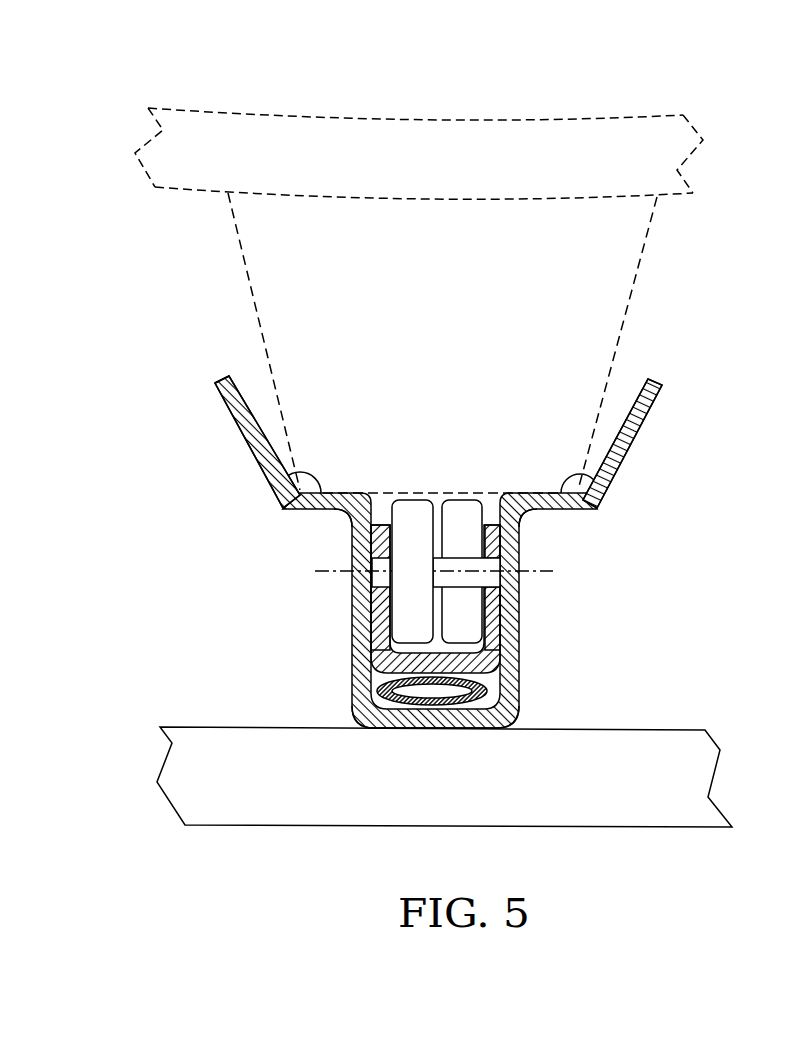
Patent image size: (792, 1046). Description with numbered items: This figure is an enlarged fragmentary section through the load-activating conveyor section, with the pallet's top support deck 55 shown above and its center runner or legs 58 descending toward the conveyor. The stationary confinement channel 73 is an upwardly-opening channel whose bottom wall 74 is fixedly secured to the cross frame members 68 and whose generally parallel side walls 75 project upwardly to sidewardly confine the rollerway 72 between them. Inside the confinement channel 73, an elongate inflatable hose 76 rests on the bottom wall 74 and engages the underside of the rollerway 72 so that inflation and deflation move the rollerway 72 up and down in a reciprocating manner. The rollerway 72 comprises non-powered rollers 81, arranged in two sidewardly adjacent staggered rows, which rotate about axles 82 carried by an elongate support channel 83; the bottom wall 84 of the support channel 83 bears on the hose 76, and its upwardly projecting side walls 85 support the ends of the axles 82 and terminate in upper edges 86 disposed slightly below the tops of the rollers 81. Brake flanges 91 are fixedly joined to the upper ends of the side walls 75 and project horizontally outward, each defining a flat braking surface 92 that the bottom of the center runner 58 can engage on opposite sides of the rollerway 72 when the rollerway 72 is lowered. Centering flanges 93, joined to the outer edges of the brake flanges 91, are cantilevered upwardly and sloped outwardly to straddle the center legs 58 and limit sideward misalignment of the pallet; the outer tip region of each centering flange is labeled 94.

The top support deck 55 is at (633, 135).
The center runner 58 is at (623, 277).
The cross frame members 68 is at (260, 780).
The rollerway 72 is at (356, 599).
The confinement channel 73 is at (537, 697).
The bottom wall 74 is at (423, 720).
The side walls 75 is at (352, 663).
The inflatable hose 76 is at (388, 707).
The rollers 81 is at (486, 513).
The axles 82 is at (528, 573).
The support channel 83 is at (352, 543).
The bottom wall 84 is at (475, 705).
The side walls 85 is at (500, 627).
The upper edges 86 is at (373, 525).
The brake flanges 91 is at (308, 511).
The braking surface 92 is at (279, 470).
The centering flanges 93 is at (433, 423).
The arm end 94 is at (236, 392).